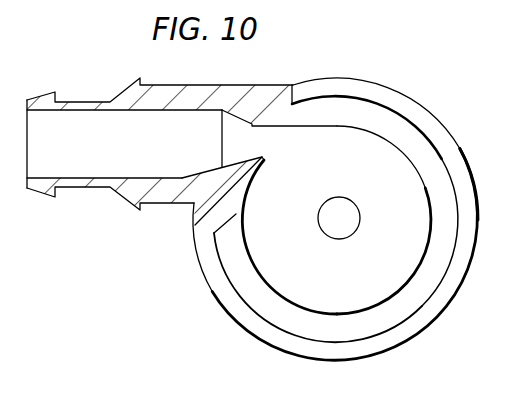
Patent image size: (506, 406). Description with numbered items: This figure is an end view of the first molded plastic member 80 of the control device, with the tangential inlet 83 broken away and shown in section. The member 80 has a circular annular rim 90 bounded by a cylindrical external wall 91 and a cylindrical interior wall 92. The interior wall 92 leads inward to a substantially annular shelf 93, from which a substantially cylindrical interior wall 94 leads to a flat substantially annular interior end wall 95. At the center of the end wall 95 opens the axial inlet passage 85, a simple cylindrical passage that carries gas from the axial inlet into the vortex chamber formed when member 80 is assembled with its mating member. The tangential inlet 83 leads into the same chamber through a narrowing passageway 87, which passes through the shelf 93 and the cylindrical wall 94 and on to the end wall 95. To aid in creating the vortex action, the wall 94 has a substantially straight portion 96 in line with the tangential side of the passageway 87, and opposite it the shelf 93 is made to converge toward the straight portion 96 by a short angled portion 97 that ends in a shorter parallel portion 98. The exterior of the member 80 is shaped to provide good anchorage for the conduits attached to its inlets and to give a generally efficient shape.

The molded plastic member 80 is at (376, 61).
The tangential inlet 83 is at (66, 153).
The axial inlet passage 85 is at (341, 198).
The tangential inlet passageway 87 is at (265, 141).
The circular annular rim 90 is at (434, 131).
The cylindrical external wall 91 is at (458, 143).
The cylindrical interior wall 92 is at (449, 242).
The annular shelf 93 is at (405, 305).
The cylindrical interior wall 94 is at (412, 271).
The annular interior end wall 95 is at (325, 279).
The straight portion 96 is at (222, 131).
The angled portion 97 is at (215, 165).
The parallel portion 98 is at (265, 160).